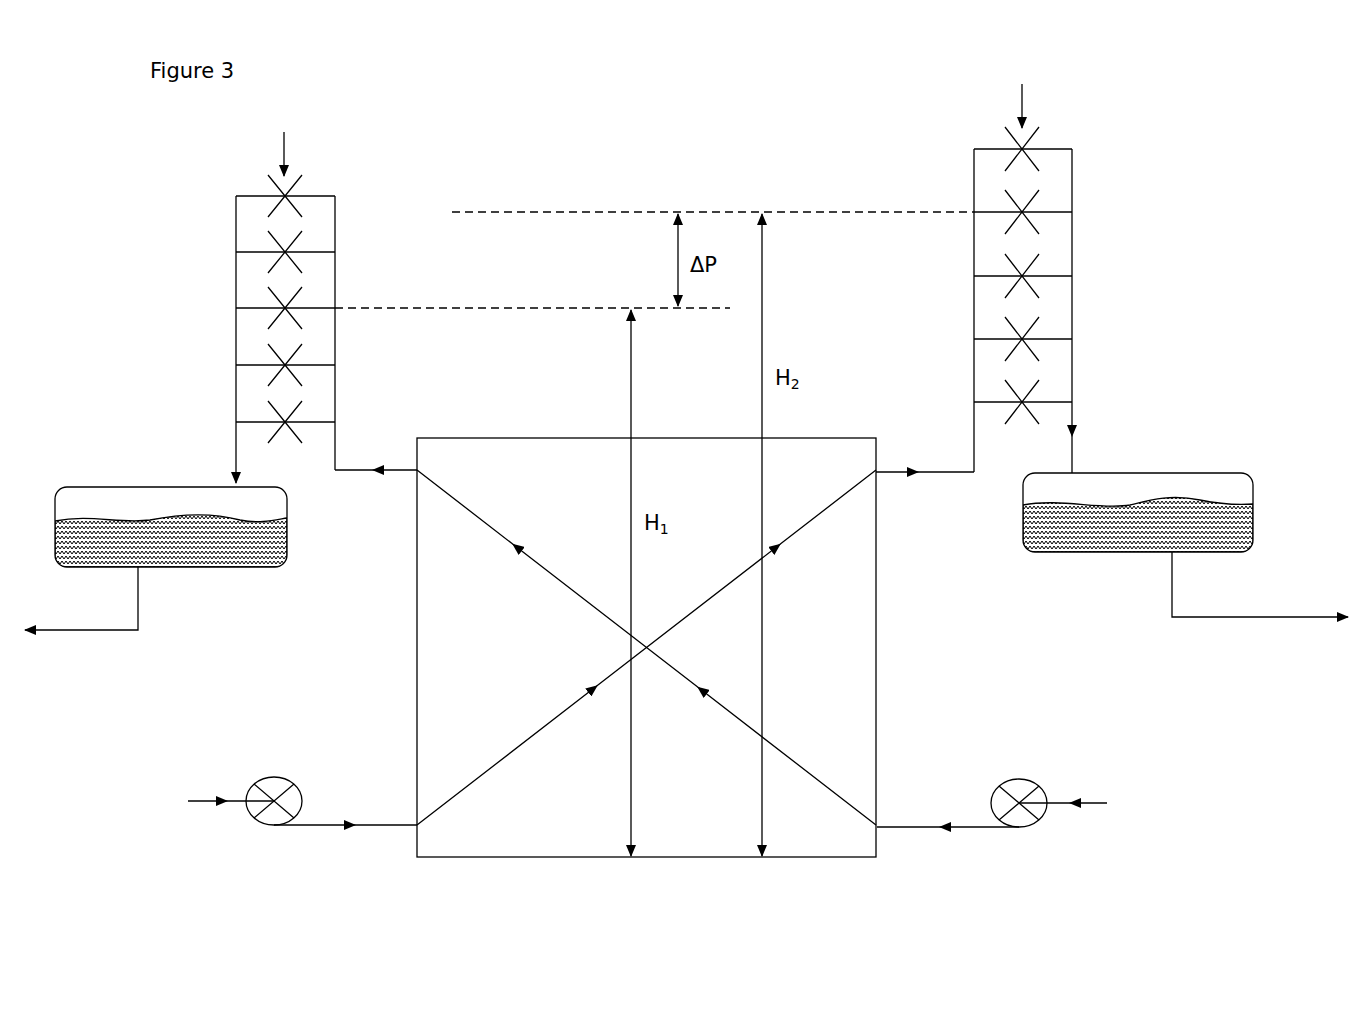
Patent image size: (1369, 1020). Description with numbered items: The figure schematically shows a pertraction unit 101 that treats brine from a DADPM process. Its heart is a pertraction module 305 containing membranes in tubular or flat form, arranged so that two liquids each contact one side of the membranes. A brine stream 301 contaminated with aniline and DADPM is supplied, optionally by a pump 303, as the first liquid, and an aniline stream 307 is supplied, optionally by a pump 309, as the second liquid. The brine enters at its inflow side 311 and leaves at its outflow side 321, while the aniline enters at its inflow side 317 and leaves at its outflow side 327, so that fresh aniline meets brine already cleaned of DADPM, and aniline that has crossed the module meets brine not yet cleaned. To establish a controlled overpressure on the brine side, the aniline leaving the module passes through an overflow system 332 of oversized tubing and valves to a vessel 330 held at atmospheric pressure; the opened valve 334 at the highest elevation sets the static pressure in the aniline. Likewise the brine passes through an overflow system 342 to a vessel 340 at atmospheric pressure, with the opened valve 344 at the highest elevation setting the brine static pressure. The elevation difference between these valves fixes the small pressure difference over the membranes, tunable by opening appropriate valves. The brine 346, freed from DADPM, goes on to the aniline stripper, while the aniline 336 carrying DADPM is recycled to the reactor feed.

The pertraction unit 101 is at (1251, 180).
The brine stream 301 is at (207, 801).
The pump 303 is at (274, 824).
The pertraction module 305 is at (646, 671).
The aniline stream 307 is at (1086, 802).
The pump 309 is at (1019, 828).
The inflow side 311 is at (345, 806).
The inflow side 317 is at (948, 807).
The outflow side 321 is at (925, 495).
The outflow side 327 is at (376, 451).
The vessel 330 is at (171, 543).
The overflow system 332 is at (284, 140).
The opened valve 334 is at (268, 291).
The aniline 336 is at (81, 616).
The vessel 340 is at (1138, 500).
The overflow system 342 is at (1022, 92).
The opened valve 344 is at (1040, 196).
The brine 346 is at (1260, 601).